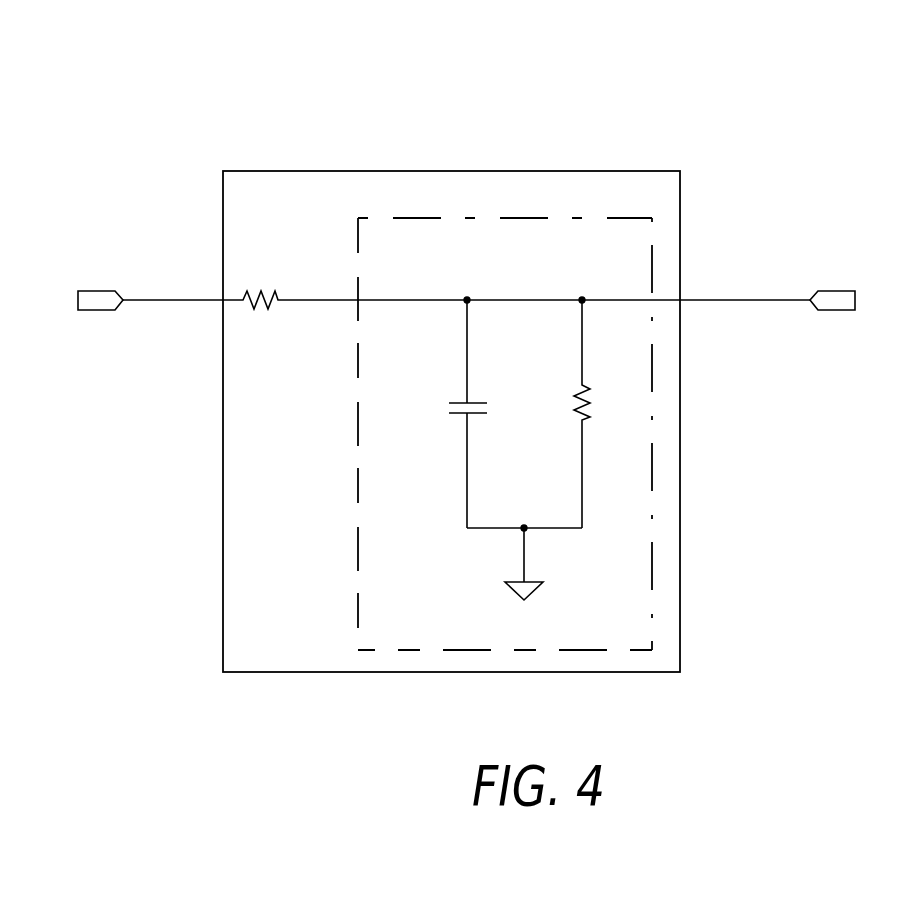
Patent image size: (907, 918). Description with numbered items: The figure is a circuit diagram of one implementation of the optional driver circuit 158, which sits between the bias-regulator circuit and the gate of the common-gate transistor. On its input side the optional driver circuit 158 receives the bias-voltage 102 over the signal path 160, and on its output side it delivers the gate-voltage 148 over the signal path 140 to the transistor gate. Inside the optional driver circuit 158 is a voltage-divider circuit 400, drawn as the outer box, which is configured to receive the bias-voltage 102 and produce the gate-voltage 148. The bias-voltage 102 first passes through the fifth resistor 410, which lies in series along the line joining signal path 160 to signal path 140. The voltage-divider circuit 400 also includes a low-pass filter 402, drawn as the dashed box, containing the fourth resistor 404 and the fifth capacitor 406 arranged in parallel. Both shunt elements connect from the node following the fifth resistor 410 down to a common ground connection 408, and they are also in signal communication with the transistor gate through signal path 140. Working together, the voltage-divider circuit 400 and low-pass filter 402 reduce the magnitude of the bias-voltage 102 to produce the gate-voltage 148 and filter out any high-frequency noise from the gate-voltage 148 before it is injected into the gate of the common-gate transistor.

The optional driver circuit 158 is at (697, 82).
The bias-voltage 102 is at (94, 298).
The signal path 160 is at (195, 300).
The fifth resistor R5 410 is at (268, 298).
The voltage-divider circuit 400 is at (290, 643).
The low-pass filter 402 is at (413, 635).
The fifth capacitor C5 406 is at (460, 418).
The fourth resistor R4 404 is at (585, 420).
The ground connection 408 is at (520, 588).
The signal path 140 is at (727, 300).
The gate-voltage 148 is at (840, 298).